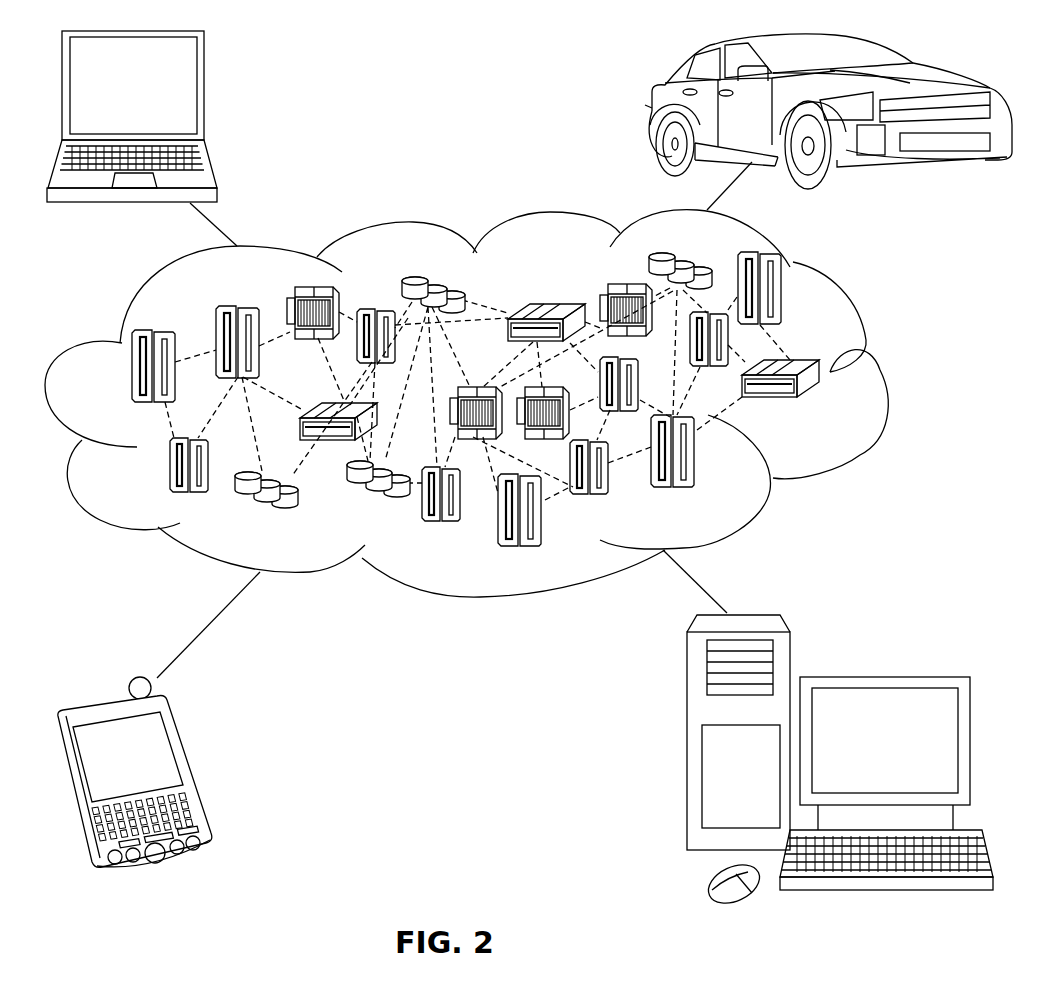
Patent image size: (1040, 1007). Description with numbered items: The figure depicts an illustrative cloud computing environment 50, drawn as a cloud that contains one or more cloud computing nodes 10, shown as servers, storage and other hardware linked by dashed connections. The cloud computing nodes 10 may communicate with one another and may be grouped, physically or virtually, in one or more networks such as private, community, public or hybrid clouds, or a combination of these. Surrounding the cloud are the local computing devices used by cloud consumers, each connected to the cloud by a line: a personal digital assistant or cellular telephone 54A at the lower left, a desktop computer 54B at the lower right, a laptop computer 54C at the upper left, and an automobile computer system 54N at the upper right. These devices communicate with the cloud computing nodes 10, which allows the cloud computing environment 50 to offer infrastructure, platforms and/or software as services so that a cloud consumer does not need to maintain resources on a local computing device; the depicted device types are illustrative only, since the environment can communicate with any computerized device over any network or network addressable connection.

The cloud computing environment 50 is at (883, 377).
The cloud computing node 10 is at (830, 411).
The personal digital assistant or cellular telephone 54A is at (193, 770).
The desktop computer 54B is at (882, 673).
The laptop computer 54C is at (204, 92).
The automobile computer system 54N is at (655, 108).